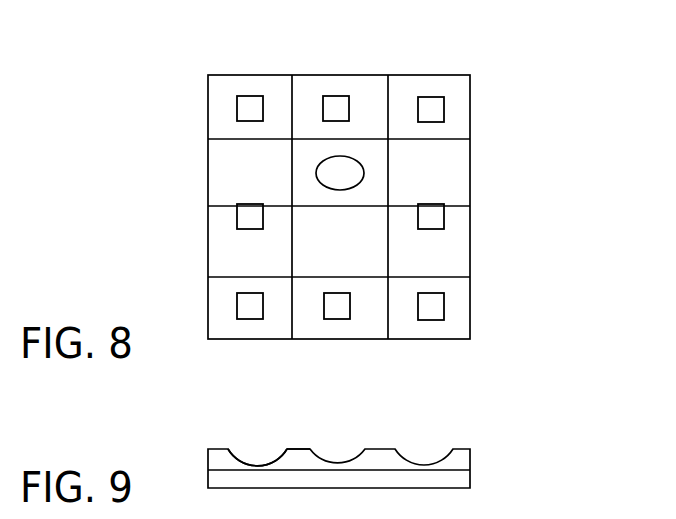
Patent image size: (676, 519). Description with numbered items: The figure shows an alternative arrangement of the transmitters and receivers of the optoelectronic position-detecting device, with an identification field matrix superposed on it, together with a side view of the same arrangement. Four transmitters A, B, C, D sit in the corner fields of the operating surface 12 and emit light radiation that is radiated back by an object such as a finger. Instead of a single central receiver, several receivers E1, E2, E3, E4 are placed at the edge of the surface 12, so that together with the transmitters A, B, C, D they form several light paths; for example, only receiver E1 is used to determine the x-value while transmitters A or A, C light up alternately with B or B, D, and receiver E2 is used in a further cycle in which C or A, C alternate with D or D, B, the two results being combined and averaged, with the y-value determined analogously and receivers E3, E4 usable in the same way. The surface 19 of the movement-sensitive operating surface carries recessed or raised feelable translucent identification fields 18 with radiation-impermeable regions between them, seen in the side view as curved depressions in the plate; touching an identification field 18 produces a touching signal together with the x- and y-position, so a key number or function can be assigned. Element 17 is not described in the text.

In FIG. 8, the surface 12 is at (367, 154).
In FIG. 8, the identification field 18 is at (340, 177).
In FIG. 9, the identification field 18 is at (252, 462).
In FIG. 9, the surface of the movement-sensitive operating surface 19 is at (296, 450).
In FIG. 9, the substrate / lens plate 17 is at (457, 463).
In FIG. 8, the transmitter A is at (244, 108).
In FIG. 8, the transmitter B is at (433, 110).
In FIG. 8, the transmitter C is at (245, 308).
In FIG. 8, the transmitter D is at (438, 307).
In FIG. 8, the receiver E1 is at (334, 108).
In FIG. 8, the receiver E2 is at (337, 308).
In FIG. 8, the receiver E3 is at (244, 218).
In FIG. 8, the receiver E4 is at (431, 216).